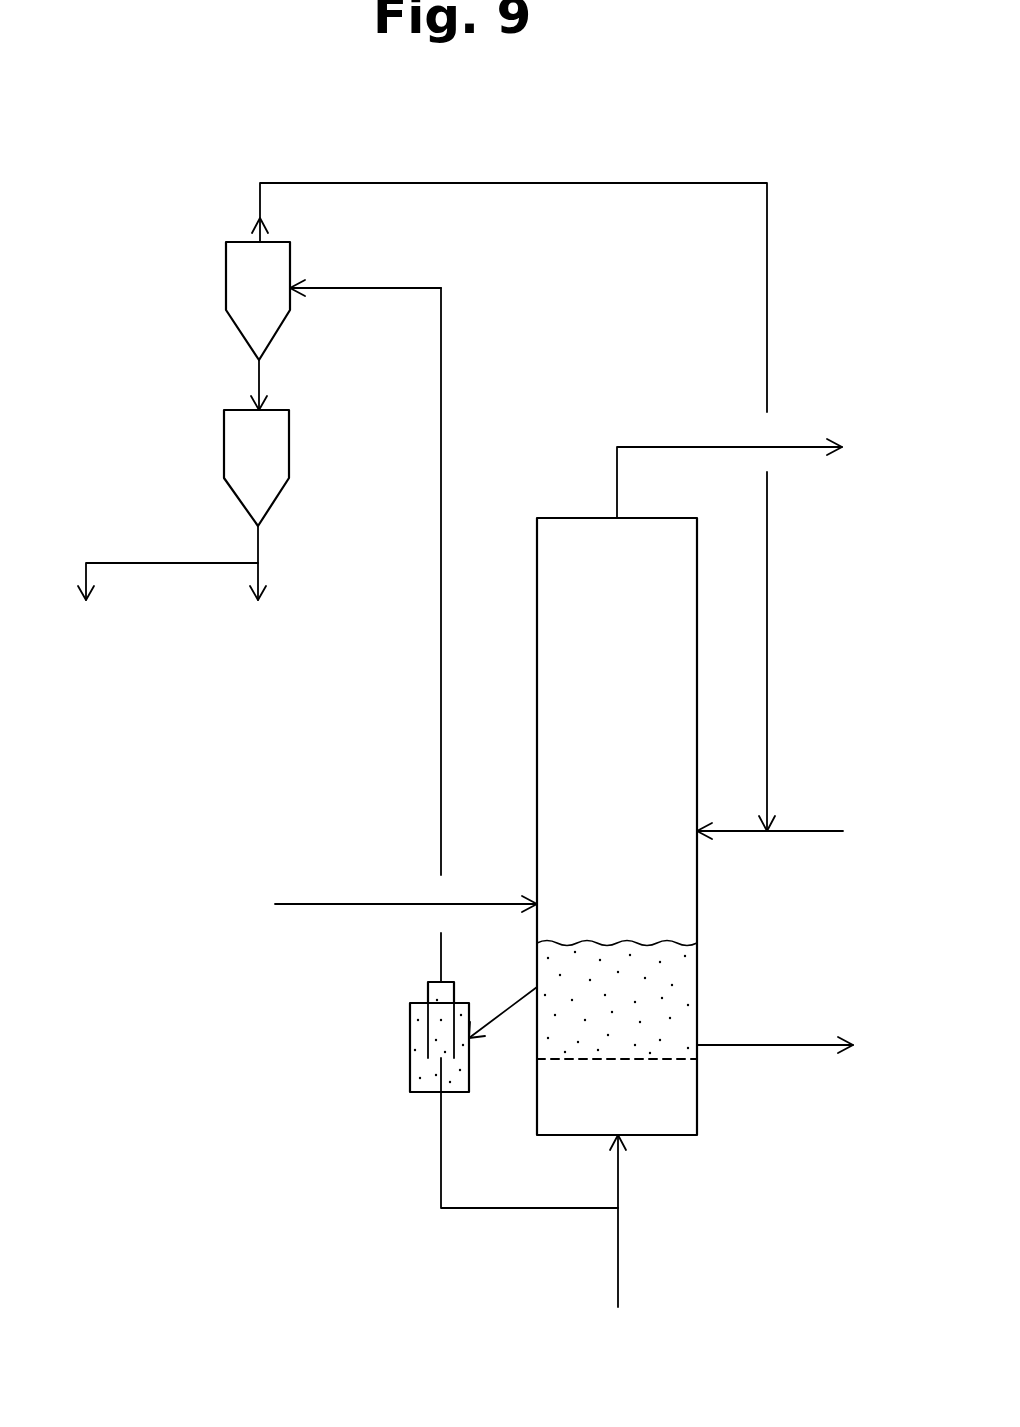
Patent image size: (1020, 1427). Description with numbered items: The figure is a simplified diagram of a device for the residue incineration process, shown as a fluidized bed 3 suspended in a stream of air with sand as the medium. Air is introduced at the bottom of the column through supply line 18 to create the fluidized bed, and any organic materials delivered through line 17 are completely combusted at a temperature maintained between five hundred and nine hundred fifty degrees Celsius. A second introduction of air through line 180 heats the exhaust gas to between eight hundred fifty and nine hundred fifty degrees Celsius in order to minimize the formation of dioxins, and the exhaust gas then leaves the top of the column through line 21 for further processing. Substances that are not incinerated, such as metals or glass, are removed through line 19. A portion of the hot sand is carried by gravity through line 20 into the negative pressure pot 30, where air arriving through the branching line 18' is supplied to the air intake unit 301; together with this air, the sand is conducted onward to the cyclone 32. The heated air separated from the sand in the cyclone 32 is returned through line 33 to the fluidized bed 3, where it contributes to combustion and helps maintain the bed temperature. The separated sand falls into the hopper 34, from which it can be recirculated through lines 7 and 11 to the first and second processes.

The fluidized bed 3 is at (537, 697).
The line 7 is at (86, 568).
The line 11 is at (258, 575).
The line 17 is at (325, 904).
The supply line 18 is at (661, 1221).
The branching line 18' is at (529, 1120).
The line 19 is at (822, 1045).
The line 20 is at (510, 1015).
The line 21 is at (667, 447).
The negative pressure pot 30 is at (410, 1027).
The cyclone 32 is at (226, 282).
The line 33 is at (766, 313).
The hopper 34 is at (224, 445).
The line 180 is at (843, 831).
The air intake unit 301 is at (425, 1095).